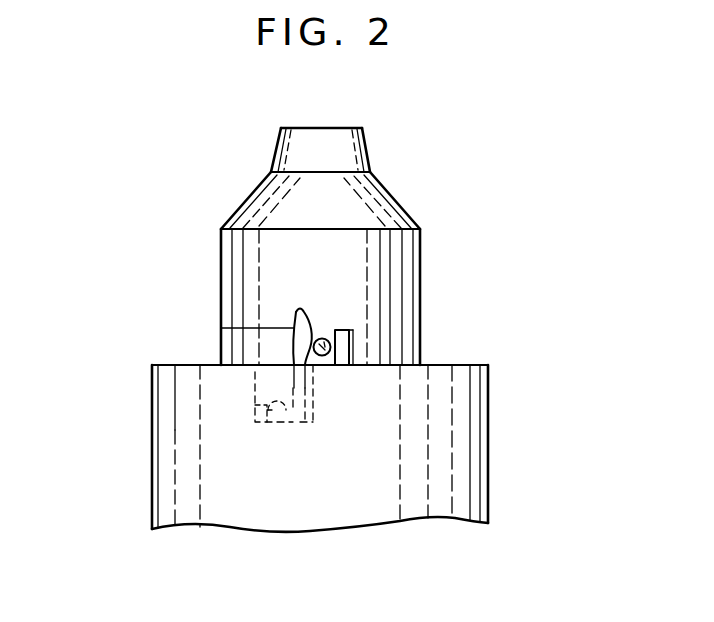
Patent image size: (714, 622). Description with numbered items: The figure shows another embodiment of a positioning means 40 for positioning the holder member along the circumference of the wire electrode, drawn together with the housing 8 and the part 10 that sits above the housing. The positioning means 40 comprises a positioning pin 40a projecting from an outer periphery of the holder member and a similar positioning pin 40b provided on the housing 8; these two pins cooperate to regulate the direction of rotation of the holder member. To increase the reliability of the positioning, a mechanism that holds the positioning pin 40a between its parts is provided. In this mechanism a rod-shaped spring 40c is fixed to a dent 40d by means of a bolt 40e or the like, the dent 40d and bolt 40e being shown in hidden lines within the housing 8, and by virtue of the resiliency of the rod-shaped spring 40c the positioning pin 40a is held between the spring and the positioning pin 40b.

The housing 8 is at (488, 501).
The cap housing 10 is at (404, 206).
The positioning means 40 is at (325, 311).
The positioning pin 40a is at (342, 356).
The positioning pin 40b is at (352, 328).
The rod-shaped spring 40c is at (295, 314).
The dent 40d is at (253, 373).
The bolt 40e is at (253, 410).